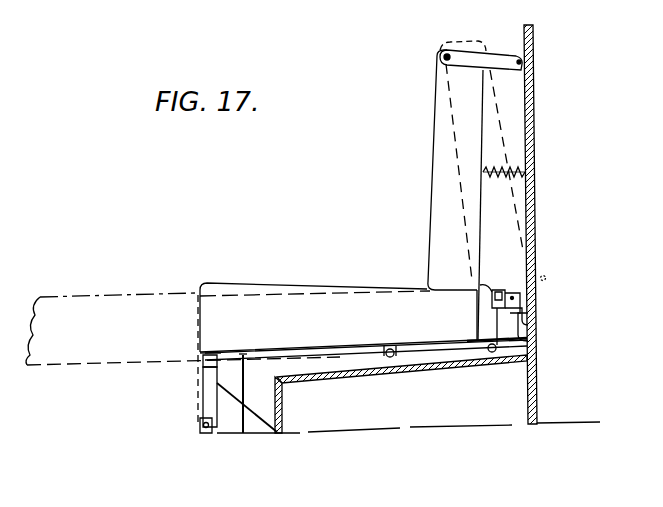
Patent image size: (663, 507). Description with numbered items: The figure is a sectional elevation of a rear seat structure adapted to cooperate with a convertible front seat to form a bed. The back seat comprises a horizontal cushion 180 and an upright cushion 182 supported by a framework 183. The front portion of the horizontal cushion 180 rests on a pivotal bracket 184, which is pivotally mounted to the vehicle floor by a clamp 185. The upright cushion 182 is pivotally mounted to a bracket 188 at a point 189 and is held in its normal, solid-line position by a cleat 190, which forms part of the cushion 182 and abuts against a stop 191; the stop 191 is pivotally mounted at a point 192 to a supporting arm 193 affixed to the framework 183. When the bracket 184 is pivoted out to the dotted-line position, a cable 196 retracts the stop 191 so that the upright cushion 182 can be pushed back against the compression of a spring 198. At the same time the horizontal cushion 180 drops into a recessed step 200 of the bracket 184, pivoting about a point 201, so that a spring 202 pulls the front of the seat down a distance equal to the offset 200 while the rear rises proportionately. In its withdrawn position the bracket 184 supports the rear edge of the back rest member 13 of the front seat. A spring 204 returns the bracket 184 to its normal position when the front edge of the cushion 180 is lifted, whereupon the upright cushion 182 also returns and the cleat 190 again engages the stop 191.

The back rest member 13 is at (150, 296).
The horizontal cushion 180 is at (313, 287).
The upright cushion 182 is at (436, 142).
The framework 183 is at (537, 243).
The pivotal bracket 184 is at (203, 405).
The clamp 185 is at (201, 427).
The bracket 188 is at (508, 50).
The pivot point 189 is at (447, 48).
The cleat 190 is at (482, 282).
The stop 191 is at (512, 290).
The pivot point 192 is at (537, 294).
The supporting arm 193 is at (540, 340).
The cable 196 is at (357, 372).
The spring 198 is at (530, 158).
The recessed step 200 is at (203, 369).
The pivot point 201 is at (391, 360).
The spring 202 is at (252, 396).
The spring 204 is at (239, 412).